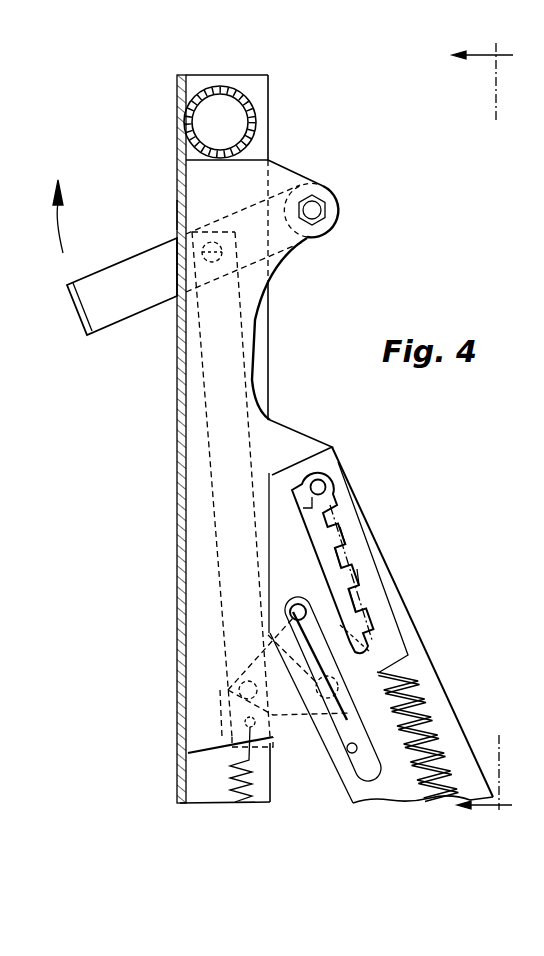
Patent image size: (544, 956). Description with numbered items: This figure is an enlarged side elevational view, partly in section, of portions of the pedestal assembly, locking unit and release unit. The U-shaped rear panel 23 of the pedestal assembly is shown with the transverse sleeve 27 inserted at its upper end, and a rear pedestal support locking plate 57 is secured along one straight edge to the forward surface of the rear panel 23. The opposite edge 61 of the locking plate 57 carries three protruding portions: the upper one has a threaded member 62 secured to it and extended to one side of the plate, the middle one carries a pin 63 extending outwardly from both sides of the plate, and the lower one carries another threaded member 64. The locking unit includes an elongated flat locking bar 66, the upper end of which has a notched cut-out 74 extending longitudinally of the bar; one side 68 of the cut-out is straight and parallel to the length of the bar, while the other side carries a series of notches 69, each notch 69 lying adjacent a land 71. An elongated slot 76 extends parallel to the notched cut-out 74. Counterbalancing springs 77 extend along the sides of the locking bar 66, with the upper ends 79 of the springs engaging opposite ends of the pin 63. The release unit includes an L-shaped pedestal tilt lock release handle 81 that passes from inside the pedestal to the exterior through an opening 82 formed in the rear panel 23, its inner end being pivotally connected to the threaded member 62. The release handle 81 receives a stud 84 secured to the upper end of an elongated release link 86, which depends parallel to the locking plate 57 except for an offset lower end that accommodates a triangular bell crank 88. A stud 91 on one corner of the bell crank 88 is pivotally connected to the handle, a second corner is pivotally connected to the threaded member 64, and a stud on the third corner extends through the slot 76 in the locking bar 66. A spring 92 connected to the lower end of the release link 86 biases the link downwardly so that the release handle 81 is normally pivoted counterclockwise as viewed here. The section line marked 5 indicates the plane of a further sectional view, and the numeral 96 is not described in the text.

The section line 5- 5 is at (489, 426).
The rear panel 23 is at (178, 404).
The transverse sleeve 27 is at (253, 110).
The rear pedestal support locking plate 57 is at (250, 177).
The opposite edge 61 is at (285, 263).
The threaded member 62 is at (320, 212).
The pin 63 is at (326, 484).
The threaded member 64 is at (333, 689).
The locking bar 66 is at (423, 672).
The straight side of the cut-out 68 is at (320, 559).
The notches 69 is at (340, 527).
The land 71 is at (348, 548).
The notched cut-out 74 is at (378, 624).
The elongated slot 76 is at (352, 752).
The counterbalancing springs 77 is at (430, 710).
The upper ends of the spring 79 is at (327, 457).
The pedestal tilt lock release handle 81 is at (122, 310).
The opening 82 is at (178, 215).
The stud 84 is at (200, 256).
The release link 86 is at (222, 352).
The bell crank 88 is at (412, 628).
The stud 91 is at (239, 692).
The spring 92 is at (228, 762).
The pawl pivot 96 is at (290, 612).